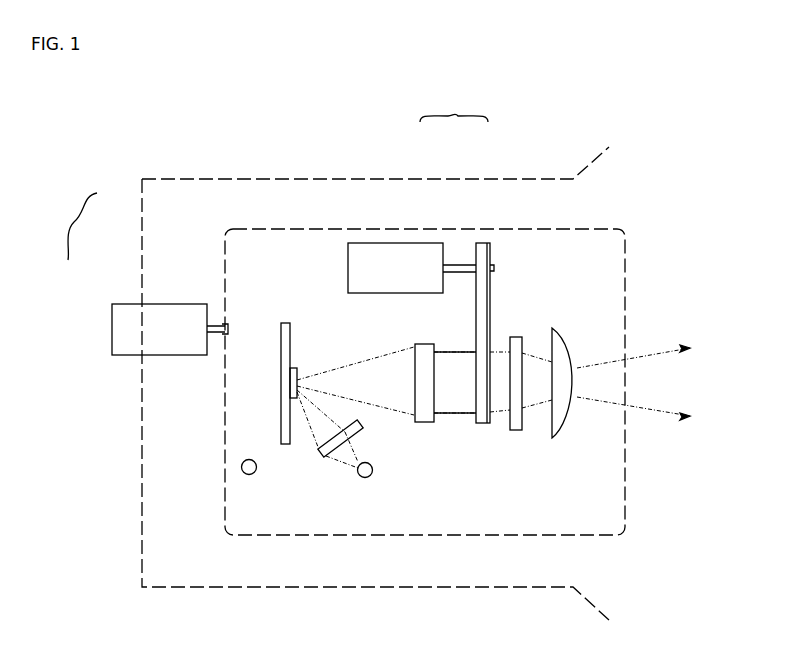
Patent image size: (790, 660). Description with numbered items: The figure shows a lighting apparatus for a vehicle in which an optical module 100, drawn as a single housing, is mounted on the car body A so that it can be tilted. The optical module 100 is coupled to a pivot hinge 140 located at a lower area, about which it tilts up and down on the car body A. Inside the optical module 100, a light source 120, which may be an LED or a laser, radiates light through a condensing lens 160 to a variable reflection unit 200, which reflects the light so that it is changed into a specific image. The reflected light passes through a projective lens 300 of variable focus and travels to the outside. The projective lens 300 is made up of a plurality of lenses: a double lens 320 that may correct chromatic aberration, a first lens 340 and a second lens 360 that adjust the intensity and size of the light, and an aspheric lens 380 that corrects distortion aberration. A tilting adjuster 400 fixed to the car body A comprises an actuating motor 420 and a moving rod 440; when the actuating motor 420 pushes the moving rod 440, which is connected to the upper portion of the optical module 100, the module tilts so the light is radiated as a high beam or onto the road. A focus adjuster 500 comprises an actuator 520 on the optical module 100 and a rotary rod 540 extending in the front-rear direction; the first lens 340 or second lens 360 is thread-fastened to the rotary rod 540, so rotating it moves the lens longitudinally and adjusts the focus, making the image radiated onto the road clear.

The car body A is at (240, 179).
The optical module 100 is at (323, 229).
The light source 120 is at (367, 478).
The pivot hinge 140 is at (249, 475).
The condensing lens 160 is at (322, 459).
The variable reflection unit 200 is at (284, 410).
The projective lens 300 is at (540, 440).
The double lens 320 is at (425, 422).
The first lens 340 is at (482, 423).
The second lens 360 is at (517, 337).
The aspheric lens 380 is at (568, 338).
The tilting adjuster 400 is at (68, 226).
The actuating motor 420 is at (116, 304).
The moving rod 440 is at (218, 325).
The focus adjuster 500 is at (454, 108).
The actuator 520 is at (400, 243).
The rotary rod 540 is at (460, 268).